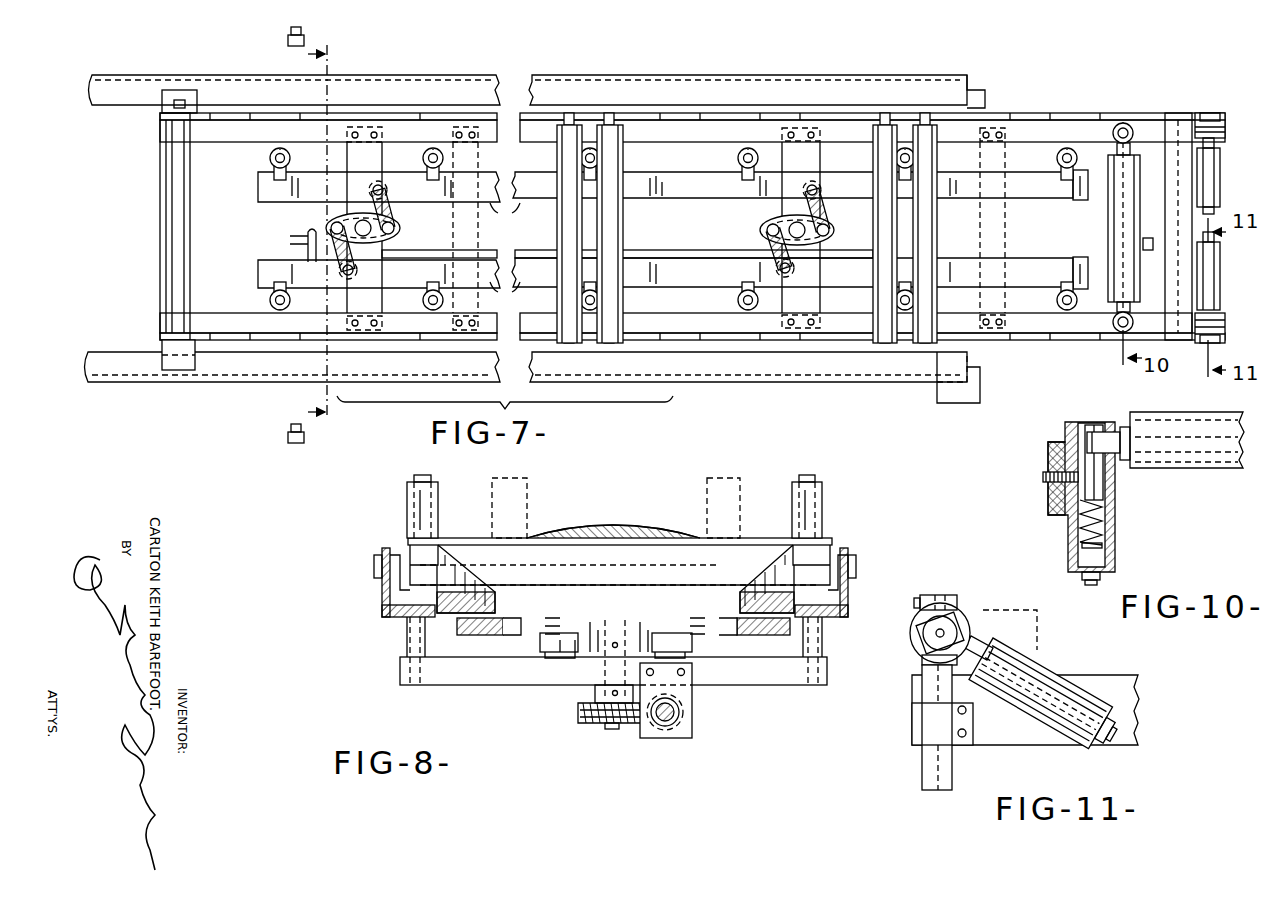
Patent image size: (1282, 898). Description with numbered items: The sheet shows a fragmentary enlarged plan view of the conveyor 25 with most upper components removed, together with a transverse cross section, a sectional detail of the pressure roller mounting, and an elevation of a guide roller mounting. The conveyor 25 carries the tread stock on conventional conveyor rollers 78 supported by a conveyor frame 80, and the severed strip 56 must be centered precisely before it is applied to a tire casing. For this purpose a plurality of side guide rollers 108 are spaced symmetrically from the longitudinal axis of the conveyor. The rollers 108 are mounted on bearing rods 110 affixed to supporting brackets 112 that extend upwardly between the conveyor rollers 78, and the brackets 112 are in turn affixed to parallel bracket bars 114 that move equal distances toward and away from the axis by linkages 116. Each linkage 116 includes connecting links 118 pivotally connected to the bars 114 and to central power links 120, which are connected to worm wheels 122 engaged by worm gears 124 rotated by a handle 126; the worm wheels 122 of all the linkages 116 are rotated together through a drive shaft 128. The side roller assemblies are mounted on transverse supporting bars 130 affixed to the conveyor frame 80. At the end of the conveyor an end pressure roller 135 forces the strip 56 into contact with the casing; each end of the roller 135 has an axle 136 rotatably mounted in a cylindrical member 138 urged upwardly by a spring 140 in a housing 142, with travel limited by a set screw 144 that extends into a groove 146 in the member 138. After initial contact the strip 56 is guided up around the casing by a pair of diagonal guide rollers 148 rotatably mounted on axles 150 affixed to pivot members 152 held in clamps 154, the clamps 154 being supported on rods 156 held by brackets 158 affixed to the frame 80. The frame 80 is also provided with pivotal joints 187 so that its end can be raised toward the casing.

In FIG. 7, the conveyor 25 is at (665, 112).
In FIG. 8, the severed strip 56 is at (602, 524).
In FIG. 7, the conveyor rollers 78 is at (590, 228).
In FIG. 8, the conveyor rollers 78 is at (602, 562).
In FIG. 7, the conveyor frame 80 is at (472, 79).
In FIG. 8, the conveyor frame 80 is at (848, 578).
In FIG. 11, the conveyor frame 80 is at (1134, 713).
In FIG. 7, the side guide rollers 108 is at (270, 164).
In FIG. 8, the side guide rollers 108 is at (403, 519).
In FIG. 7, the bearing rods 110 is at (273, 156).
In FIG. 8, the bearing rods 110 is at (410, 500).
In FIG. 7, the supporting brackets 112 is at (390, 193).
In FIG. 8, the supporting brackets 112 is at (476, 566).
In FIG. 7, the bracket bars 114 is at (506, 253).
In FIG. 8, the bracket bars 114 is at (385, 592).
In FIG. 7, the linkages 116 is at (395, 225).
In FIG. 7, the connecting links 118 is at (392, 203).
In FIG. 8, the connecting links 118 is at (545, 612).
In FIG. 7, the central power links 120 is at (340, 218).
In FIG. 8, the central power links 120 is at (637, 626).
In FIG. 8, the worm wheels 122 is at (580, 729).
In FIG. 8, the worm gears 124 is at (694, 723).
In FIG. 7, the handle 126 is at (306, 243).
In FIG. 7, the drive shaft 128 is at (502, 254).
In FIG. 8, the drive shaft 128 is at (665, 722).
In FIG. 7, the transverse supporting bars 130 is at (378, 166).
In FIG. 8, the transverse supporting bars 130 is at (505, 686).
In FIG. 7, the end pressure roller 135 is at (1108, 237).
In FIG. 10, the end pressure roller 135 is at (1204, 468).
In FIG. 10, the axle 136 is at (1123, 465).
In FIG. 10, the cylindrical member 138 is at (1108, 492).
In FIG. 10, the spring 140 is at (1104, 545).
In FIG. 7, the housing 142 is at (1122, 122).
In FIG. 10, the housing 142 is at (1068, 530).
In FIG. 10, the set screw 144 is at (1043, 487).
In FIG. 10, the groove 146 is at (1045, 457).
In FIG. 7, the diagonal guide rollers 148 is at (1219, 169).
In FIG. 11, the diagonal guide rollers 148 is at (1055, 667).
In FIG. 11, the axles 150 is at (1040, 716).
In FIG. 11, the pivot members 152 is at (958, 614).
In FIG. 7, the clamps 154 is at (1216, 115).
In FIG. 11, the clamps 154 is at (920, 656).
In FIG. 7, the rods 156 is at (1203, 113).
In FIG. 11, the rods 156 is at (920, 694).
In FIG. 11, the brackets 158 is at (910, 738).
In FIG. 7, the pivotal joints 187 is at (160, 354).